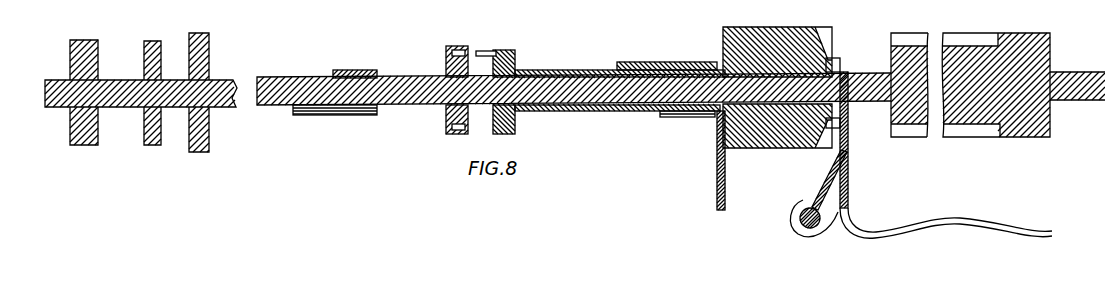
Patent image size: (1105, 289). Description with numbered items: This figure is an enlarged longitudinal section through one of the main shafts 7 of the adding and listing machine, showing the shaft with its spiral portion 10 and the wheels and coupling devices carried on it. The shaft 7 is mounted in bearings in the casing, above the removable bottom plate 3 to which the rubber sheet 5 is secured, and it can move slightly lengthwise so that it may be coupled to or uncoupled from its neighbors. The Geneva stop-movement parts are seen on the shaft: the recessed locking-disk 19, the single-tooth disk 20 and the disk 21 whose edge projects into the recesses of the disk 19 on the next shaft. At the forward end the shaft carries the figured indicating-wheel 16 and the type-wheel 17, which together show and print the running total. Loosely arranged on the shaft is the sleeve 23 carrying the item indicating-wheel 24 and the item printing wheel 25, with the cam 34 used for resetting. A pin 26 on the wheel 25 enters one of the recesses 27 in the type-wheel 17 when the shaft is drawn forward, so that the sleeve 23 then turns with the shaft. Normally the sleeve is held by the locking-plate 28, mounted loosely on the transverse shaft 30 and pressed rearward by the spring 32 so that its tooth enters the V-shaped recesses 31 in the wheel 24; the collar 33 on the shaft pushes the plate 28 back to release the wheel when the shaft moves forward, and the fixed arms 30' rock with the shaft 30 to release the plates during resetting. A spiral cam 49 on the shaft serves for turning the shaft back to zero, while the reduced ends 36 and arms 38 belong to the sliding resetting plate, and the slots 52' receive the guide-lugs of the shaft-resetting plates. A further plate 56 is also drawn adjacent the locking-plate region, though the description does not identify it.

The bottom plate 3 is at (651, 13).
The rubber sheet or plate 5 is at (711, 11).
The main shaft 7 is at (410, 100).
The spiral portion 10 is at (963, 131).
The figured indicating-wheel 16 is at (1045, 135).
The type-wheel 17 is at (450, 62).
The disk having concave recesses 19 is at (82, 145).
The single-tooth disk 20 is at (152, 145).
The disk 21 is at (197, 152).
The sleeve 23 is at (580, 71).
The figured indicating-wheel 24 is at (772, 18).
The figured type or printing wheel 25 is at (517, 128).
The pin 26 is at (485, 50).
The recesses 27 is at (458, 50).
The locking-plate 28 is at (849, 152).
The transverse shaft 30 is at (545, 118).
The fixed arms 30' is at (820, 180).
The slots or recesses 31 is at (824, 36).
The spring 32 is at (926, 222).
The collar 33 is at (836, 70).
The cam 34 is at (667, 62).
The reduced ends 36 is at (588, 7).
The arms 38 is at (303, 7).
The spiral cam 49 is at (362, 112).
The slots 52' is at (183, 12).
The plate 56 is at (717, 160).